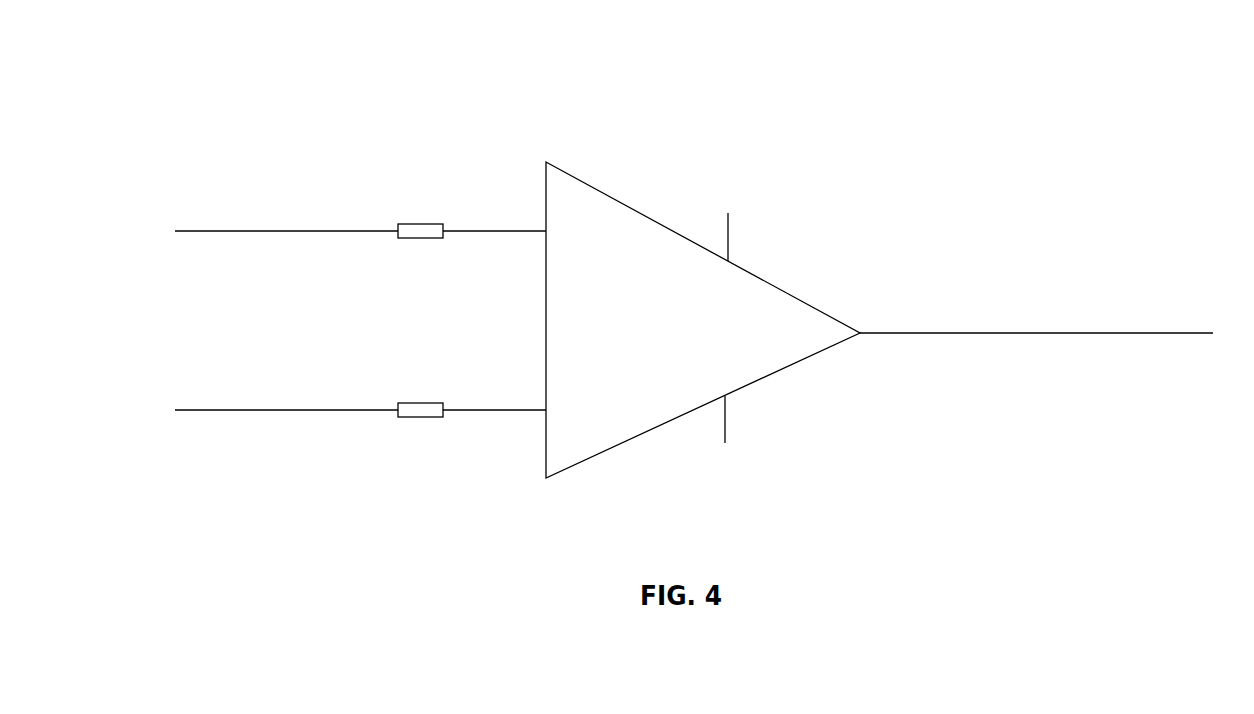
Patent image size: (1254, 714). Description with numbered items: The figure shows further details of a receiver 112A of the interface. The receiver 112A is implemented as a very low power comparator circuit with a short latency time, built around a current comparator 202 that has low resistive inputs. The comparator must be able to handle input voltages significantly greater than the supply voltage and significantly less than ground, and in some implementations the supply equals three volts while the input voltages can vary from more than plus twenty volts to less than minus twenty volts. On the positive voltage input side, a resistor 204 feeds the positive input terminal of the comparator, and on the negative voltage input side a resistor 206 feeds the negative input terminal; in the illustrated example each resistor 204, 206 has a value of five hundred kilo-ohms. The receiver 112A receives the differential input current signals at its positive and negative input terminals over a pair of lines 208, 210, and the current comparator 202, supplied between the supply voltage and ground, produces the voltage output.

The receiver 112A is at (200, 63).
The current comparator 202 is at (795, 298).
The resistor 204 is at (421, 240).
The resistor 206 is at (421, 419).
The line 208 is at (507, 233).
The line 210 is at (505, 412).